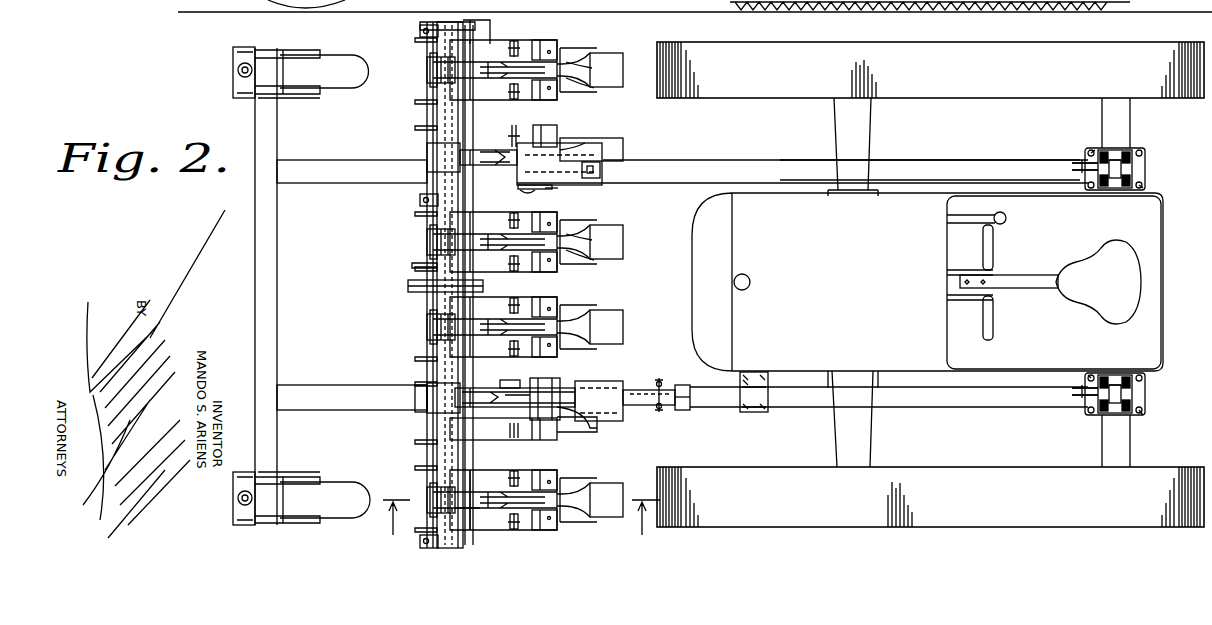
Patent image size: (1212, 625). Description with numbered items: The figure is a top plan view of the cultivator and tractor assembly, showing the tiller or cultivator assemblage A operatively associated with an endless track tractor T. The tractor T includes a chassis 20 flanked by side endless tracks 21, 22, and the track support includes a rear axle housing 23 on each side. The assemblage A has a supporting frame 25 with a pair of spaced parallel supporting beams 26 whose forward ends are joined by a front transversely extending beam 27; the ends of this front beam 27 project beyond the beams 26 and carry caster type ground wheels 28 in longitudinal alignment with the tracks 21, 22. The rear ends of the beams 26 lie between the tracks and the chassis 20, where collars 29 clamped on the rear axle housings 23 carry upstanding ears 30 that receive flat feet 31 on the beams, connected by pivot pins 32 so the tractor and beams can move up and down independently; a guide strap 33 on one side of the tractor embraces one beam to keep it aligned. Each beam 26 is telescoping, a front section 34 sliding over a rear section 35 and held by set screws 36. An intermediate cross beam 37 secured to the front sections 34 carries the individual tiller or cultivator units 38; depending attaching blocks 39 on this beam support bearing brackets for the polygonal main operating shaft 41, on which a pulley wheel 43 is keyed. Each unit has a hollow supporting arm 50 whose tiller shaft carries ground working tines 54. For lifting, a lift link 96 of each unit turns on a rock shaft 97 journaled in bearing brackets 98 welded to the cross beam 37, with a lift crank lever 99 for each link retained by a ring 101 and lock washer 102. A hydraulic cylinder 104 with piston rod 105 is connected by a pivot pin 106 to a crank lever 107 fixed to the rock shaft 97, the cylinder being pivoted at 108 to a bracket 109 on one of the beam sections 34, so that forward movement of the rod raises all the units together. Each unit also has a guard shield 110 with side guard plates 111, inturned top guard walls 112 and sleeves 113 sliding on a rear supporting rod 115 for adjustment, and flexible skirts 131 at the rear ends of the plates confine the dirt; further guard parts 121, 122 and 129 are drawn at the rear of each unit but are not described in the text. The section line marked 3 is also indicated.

The tractor T is at (1110, 62).
The tiller or cultivator assemblage A is at (272, 160).
The section line 3 is at (521, 506).
The chassis 20 is at (985, 185).
The endless track 21 is at (994, 46).
The endless track 22 is at (962, 480).
The rear axle housing 23 is at (1125, 460).
The supporting frame 25 is at (300, 378).
The supporting beams 26 is at (690, 162).
The front transversely extending beam 27 is at (266, 258).
The ground wheels 28 is at (355, 62).
The collars 29 is at (1148, 172).
The upstanding ears 30 is at (1146, 155).
The flat feet 31 is at (1072, 168).
The pivot pins 32 is at (1132, 150).
The guide strap 33 is at (750, 412).
The front section 34 is at (368, 172).
The rear section 35 is at (800, 172).
The set screws 36 is at (585, 186).
The intermediate cross beam 37 is at (437, 120).
The tiller or cultivator units 38 is at (557, 100).
The attaching blocks 39 is at (420, 42).
The main operating shaft 41 is at (415, 262).
The pulley wheel 43 is at (408, 286).
The supporting arm 50 is at (474, 246).
The ground working teeth or tines 54 is at (495, 26).
The lift link 96 is at (508, 92).
The rock shaft 97 is at (462, 115).
The bearing brackets 98 is at (437, 142).
The lift crank lever 99 is at (466, 510).
The ring 101 is at (474, 494).
The lock washer 102 is at (470, 478).
The cylinder 104 is at (628, 388).
The piston rod 105 is at (545, 380).
The pivot pin 106 is at (500, 386).
The crank lever 107 is at (470, 420).
The pivotal connection 108 is at (670, 380).
The bracket 109 is at (684, 412).
The guard shields 110 is at (550, 188).
The guard plates 111 is at (492, 14).
The top guard walls 112 is at (520, 50).
The sleeves 113 is at (512, 140).
The rear supporting rod 115 is at (520, 196).
The hopper 121 is at (608, 70).
The funnel 122 is at (585, 44).
The tube 129 is at (594, 60).
The flexible skirts 131 is at (610, 22).